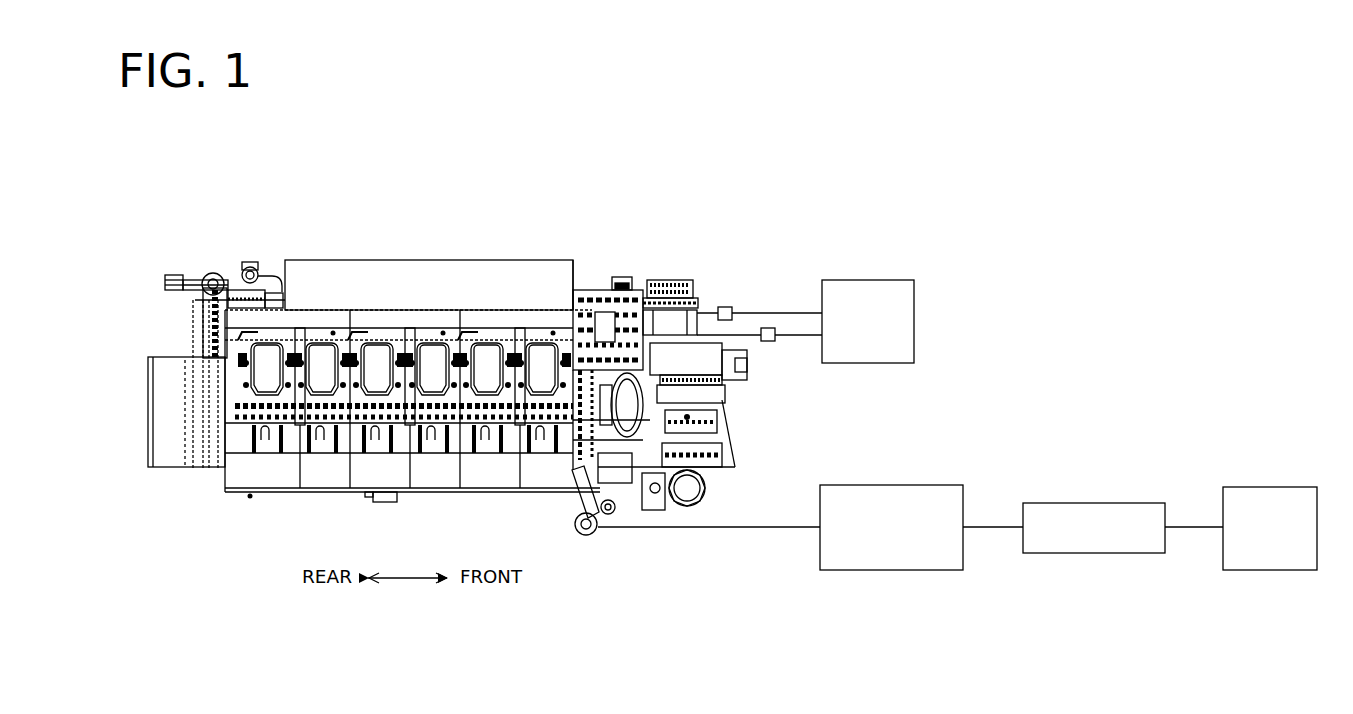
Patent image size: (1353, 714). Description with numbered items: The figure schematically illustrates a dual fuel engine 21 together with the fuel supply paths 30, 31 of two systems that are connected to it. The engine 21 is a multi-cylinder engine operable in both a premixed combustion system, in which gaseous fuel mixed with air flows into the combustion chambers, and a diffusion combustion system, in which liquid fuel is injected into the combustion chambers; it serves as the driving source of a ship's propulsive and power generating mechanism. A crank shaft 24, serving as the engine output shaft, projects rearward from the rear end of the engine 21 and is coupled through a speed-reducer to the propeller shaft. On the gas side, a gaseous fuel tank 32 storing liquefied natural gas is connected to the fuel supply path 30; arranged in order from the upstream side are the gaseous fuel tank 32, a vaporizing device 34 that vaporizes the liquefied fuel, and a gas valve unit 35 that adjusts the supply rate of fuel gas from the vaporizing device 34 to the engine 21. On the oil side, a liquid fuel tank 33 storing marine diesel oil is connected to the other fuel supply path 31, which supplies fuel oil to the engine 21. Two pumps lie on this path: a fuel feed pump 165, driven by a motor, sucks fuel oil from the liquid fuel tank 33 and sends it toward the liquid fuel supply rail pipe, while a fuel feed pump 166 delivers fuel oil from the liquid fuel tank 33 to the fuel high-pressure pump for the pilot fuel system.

The engine 21 is at (442, 240).
The crank shaft 24 is at (185, 468).
The fuel supply path 30 is at (765, 530).
The fuel supply path 31 is at (766, 300).
The gaseous fuel tank 32 is at (1272, 570).
The liquid fuel tank 33 is at (865, 280).
The vaporizing device 34 is at (1093, 553).
The gas valve unit 35 is at (893, 570).
The fuel feed pump 165 is at (720, 307).
The fuel feed pump 166 is at (770, 340).